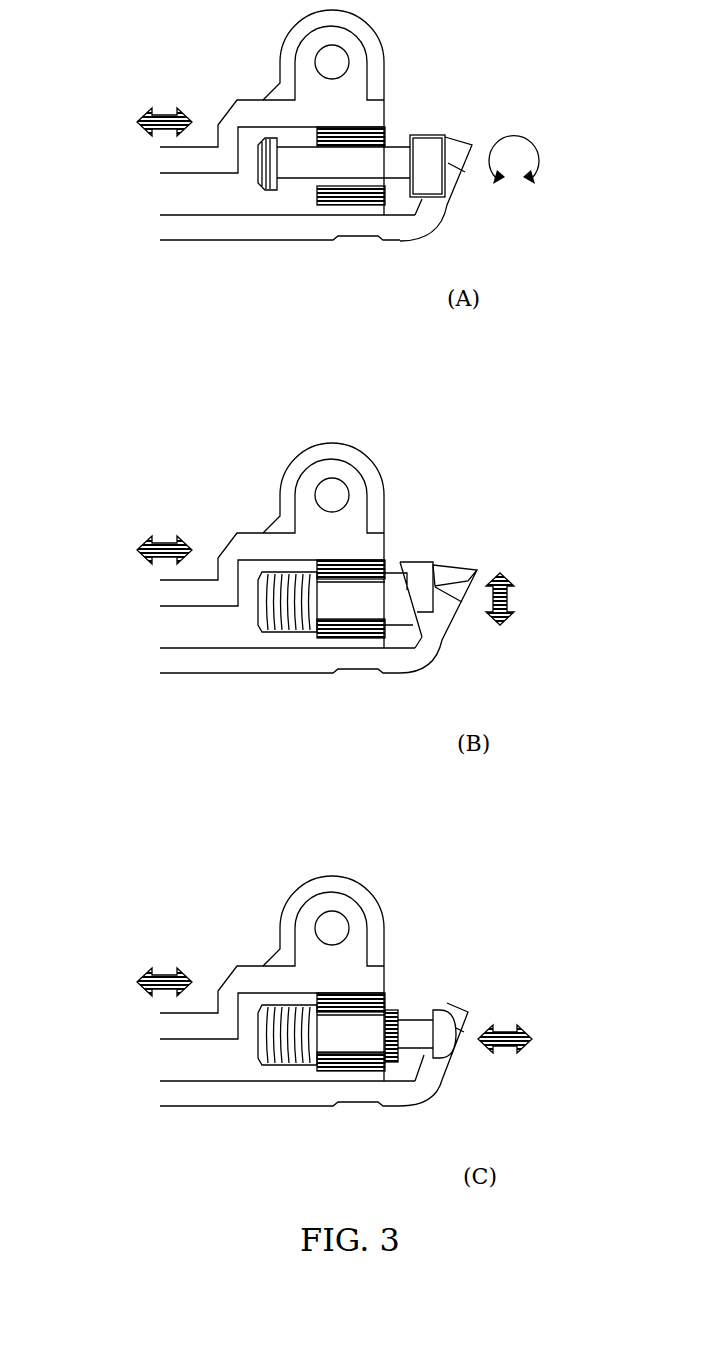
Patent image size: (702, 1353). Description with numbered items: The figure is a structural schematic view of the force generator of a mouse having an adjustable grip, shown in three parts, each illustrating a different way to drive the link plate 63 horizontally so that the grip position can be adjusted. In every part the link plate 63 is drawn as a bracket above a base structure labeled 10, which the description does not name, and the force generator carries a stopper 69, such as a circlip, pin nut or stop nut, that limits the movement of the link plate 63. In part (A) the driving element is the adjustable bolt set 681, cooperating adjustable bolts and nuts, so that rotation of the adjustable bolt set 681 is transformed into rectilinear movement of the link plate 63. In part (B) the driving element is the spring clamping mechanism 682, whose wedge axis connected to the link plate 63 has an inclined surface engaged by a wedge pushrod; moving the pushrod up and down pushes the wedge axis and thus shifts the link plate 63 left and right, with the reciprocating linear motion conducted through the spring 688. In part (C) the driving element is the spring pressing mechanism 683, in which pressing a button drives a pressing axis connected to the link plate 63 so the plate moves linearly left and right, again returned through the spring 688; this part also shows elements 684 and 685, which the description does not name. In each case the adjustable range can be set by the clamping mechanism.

The base plate 10 is at (195, 239).
The link plate 63 is at (244, 111).
The stopper 69 is at (273, 190).
The adjustable bolt set 681 is at (397, 160).
The spring clamping mechanism 682 is at (392, 572).
The spring pressing mechanism 683 is at (433, 570).
The positioning block 684 is at (392, 1010).
The pull knob 685 is at (425, 1028).
The spring 688 is at (295, 633).